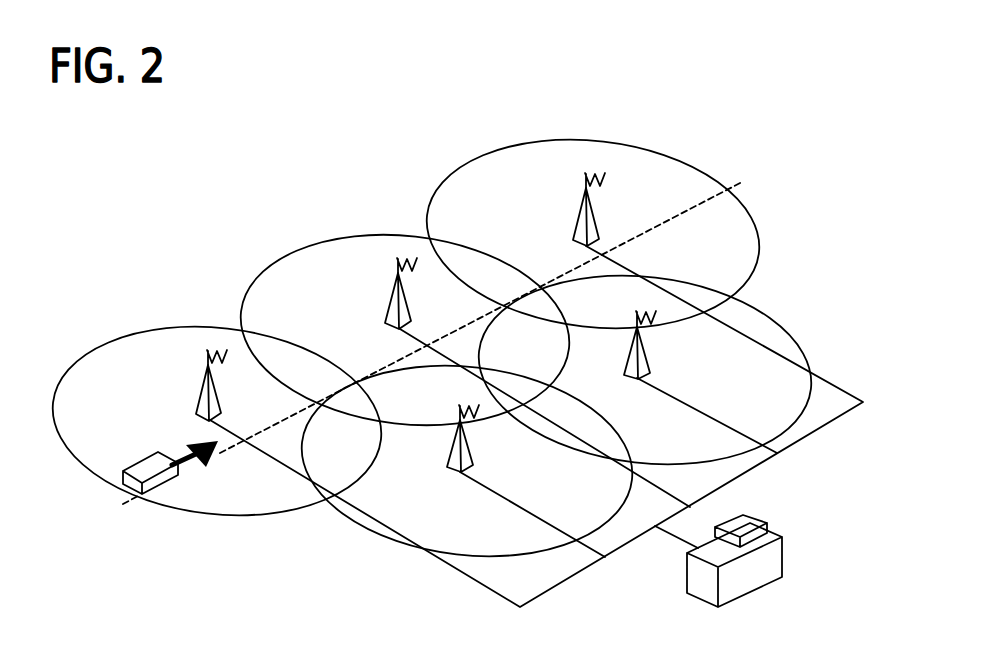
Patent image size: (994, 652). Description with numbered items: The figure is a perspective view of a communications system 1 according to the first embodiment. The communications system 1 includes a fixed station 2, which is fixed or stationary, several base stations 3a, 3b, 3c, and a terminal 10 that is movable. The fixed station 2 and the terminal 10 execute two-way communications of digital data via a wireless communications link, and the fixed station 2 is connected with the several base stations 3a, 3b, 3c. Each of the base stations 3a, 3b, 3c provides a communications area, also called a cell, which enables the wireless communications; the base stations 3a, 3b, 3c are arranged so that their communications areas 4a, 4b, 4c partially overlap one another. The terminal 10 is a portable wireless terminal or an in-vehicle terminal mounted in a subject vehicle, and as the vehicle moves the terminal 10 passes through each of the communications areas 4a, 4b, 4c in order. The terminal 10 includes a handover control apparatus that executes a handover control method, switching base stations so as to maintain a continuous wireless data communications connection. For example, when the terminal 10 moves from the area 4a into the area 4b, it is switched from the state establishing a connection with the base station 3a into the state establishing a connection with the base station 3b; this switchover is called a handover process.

The communications system 1 is at (224, 221).
The fixed station 2 is at (687, 588).
The base station 3a is at (201, 388).
The base station 3b is at (392, 300).
The base station 3c is at (582, 206).
The communications area 4a is at (197, 328).
The communications area 4b is at (385, 236).
The communications area 4c is at (573, 141).
The terminal 10 is at (158, 484).